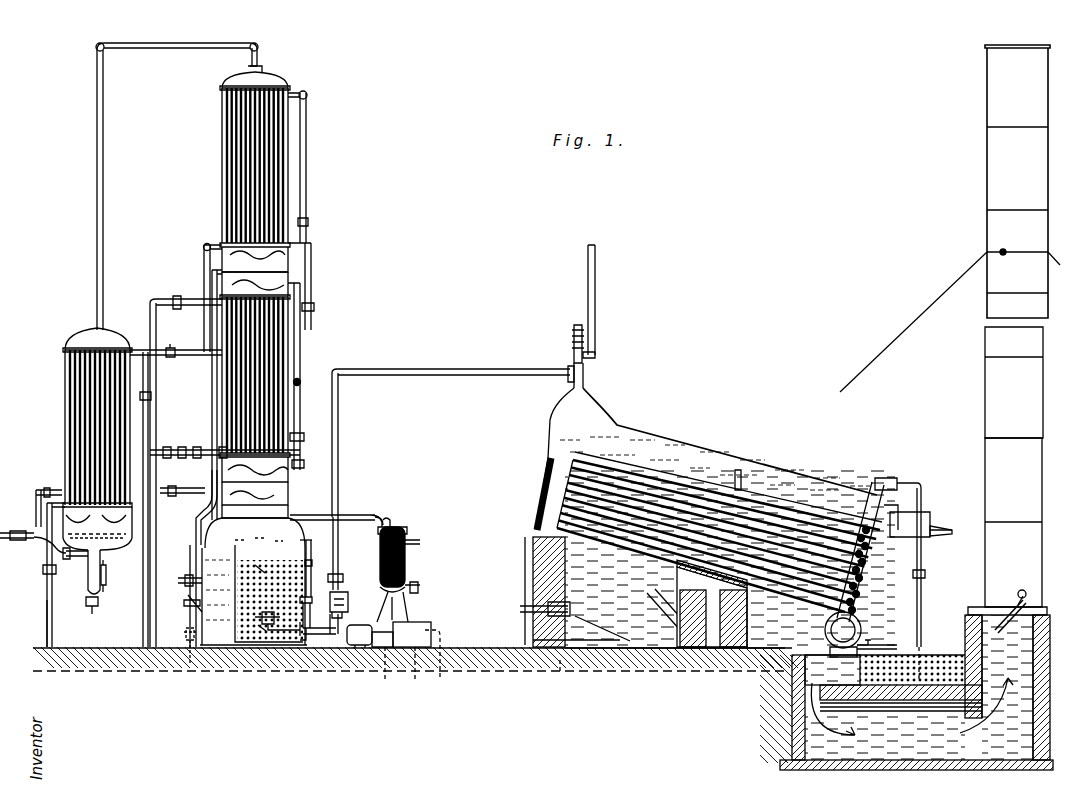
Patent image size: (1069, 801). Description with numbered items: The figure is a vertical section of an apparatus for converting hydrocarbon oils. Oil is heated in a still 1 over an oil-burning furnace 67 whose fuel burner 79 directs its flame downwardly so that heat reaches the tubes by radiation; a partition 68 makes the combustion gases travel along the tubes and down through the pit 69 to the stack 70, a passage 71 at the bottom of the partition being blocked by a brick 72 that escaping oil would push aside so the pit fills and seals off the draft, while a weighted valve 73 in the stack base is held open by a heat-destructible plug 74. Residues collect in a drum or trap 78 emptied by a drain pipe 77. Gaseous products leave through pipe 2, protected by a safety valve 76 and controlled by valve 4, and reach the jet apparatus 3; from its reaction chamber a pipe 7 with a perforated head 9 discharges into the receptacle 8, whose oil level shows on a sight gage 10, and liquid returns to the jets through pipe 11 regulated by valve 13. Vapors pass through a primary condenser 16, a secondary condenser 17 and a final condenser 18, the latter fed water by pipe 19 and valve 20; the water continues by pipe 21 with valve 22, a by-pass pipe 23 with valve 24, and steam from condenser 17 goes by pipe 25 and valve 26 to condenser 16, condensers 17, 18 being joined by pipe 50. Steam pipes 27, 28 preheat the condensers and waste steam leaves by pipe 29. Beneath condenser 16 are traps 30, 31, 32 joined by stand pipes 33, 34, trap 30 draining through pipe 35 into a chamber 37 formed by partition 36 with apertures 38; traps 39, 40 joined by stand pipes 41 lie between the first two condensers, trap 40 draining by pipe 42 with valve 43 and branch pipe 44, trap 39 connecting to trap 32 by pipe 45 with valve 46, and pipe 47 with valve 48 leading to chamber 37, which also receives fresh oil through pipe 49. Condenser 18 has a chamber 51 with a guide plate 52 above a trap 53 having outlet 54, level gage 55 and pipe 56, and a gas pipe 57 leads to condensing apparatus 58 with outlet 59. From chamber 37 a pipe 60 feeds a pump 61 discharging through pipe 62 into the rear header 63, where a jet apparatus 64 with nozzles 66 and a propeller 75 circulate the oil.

The still 1 is at (686, 447).
The pipe 2 is at (460, 372).
The jet apparatus 3 is at (347, 596).
The valve 4 is at (338, 575).
The pipe 7 is at (305, 620).
The receptacle 8 is at (305, 644).
The perforated head 9 is at (277, 616).
The sight gage 10 is at (311, 555).
The pipe 11 is at (334, 634).
The valve 13 is at (345, 618).
The primary condenser 16 is at (275, 350).
The secondary condenser 17 is at (275, 193).
The final condenser 18 is at (75, 385).
The pipe 19 is at (47, 602).
The valve 20 is at (43, 572).
The pipe 21 is at (177, 352).
The valve 22 is at (186, 471).
The pipe 23 is at (150, 395).
The valve 24 is at (190, 582).
The pipe 25 is at (306, 173).
The valve 26 is at (305, 435).
The pipe 27 is at (205, 497).
The pipe 28 is at (313, 258).
The pipe 29 is at (184, 635).
The trap 30 is at (255, 517).
The trap 31 is at (285, 510).
The trap 32 is at (288, 488).
The stand pipes 33 is at (210, 465).
The stand pipes 34 is at (300, 500).
The pipe 35 is at (226, 538).
The partition 36 is at (236, 548).
The chamber 37 is at (233, 630).
The apertures 38 is at (262, 560).
The trap 39 is at (255, 287).
The trap 40 is at (255, 260).
The stand pipes 41 is at (222, 265).
The pipe 42 is at (212, 408).
The valve 43 is at (184, 600).
The pipe 44 is at (37, 490).
The pipe 45 is at (303, 395).
The valve 46 is at (300, 465).
The pipe 47 is at (190, 540).
The valve 48 is at (188, 615).
The pipe 49 is at (182, 578).
The pipe 50 is at (104, 183).
The chamber 51 is at (97, 522).
The plate 52 is at (97, 525).
The trap 53 is at (102, 552).
The valve-controlled outlet 54 is at (90, 605).
The level gage 55 is at (107, 572).
The pipe 56 is at (44, 556).
The gas conducting pipe 57 is at (383, 514).
The condensing apparatus 58 is at (406, 553).
The valve-controlled outlet 59 is at (421, 587).
The pipe 60 is at (268, 671).
The pump 61 is at (418, 627).
The pipe 62 is at (556, 672).
The rear header 63 is at (886, 479).
The jet apparatus 64 is at (868, 496).
The nozzles 66 is at (878, 540).
The oil-burning furnace 67 is at (533, 553).
The partition 68 is at (730, 558).
The pit 69 is at (906, 712).
The stack 70 is at (985, 470).
The passage 71 is at (705, 652).
The brick 72 is at (750, 652).
The weighted valve 73 is at (966, 617).
The plug 74 is at (1005, 600).
The propeller 75 is at (740, 484).
The safety valve 76 is at (572, 360).
The drain pipe 77 is at (875, 642).
The drum or trap 78 is at (862, 622).
The burner 79 is at (545, 606).